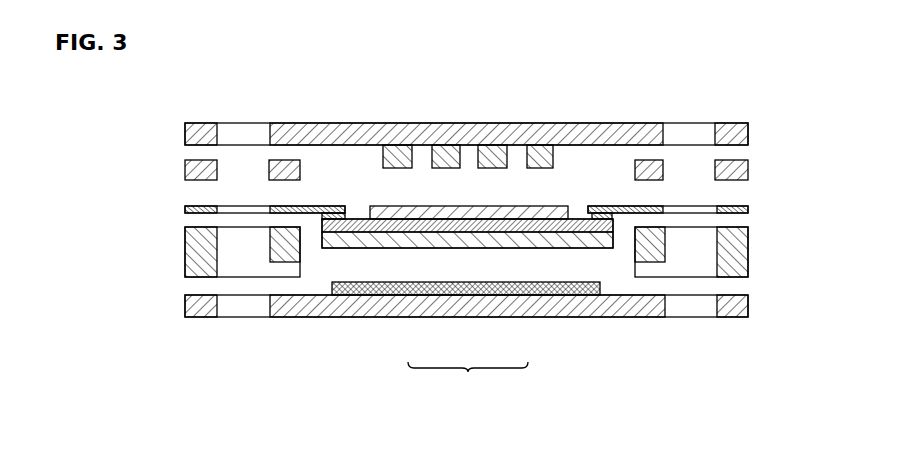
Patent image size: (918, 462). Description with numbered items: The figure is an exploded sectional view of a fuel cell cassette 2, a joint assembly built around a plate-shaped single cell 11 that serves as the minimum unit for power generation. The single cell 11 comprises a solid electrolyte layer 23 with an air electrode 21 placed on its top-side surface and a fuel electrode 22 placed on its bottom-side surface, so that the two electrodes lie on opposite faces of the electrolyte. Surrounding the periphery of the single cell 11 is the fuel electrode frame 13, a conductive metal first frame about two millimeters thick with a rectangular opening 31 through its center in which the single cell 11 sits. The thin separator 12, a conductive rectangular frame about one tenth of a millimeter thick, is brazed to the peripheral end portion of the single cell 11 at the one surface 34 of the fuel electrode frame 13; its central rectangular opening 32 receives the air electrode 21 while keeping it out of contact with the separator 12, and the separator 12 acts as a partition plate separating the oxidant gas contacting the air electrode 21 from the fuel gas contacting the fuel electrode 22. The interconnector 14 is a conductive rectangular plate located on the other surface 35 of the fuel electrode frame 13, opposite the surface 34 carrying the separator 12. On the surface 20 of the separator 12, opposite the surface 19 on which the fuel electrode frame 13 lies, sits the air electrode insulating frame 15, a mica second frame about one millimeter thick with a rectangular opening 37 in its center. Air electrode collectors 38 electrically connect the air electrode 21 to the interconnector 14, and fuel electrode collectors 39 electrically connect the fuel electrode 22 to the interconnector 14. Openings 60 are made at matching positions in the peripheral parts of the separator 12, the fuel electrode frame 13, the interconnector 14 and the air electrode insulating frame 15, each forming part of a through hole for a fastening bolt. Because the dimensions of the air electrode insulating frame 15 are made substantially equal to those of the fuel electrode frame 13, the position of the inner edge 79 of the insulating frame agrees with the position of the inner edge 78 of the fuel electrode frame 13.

The fuel cell cassette 2 is at (160, 240).
The single cell 11 is at (468, 372).
The separator 12 is at (748, 210).
The fuel electrode frame 13 is at (748, 253).
The interconnector 14 is at (748, 134).
The air electrode insulating frame 15 is at (748, 171).
The surface 19 is at (621, 216).
The surface 20 is at (612, 202).
The air electrode 21 is at (500, 222).
The fuel electrode 22 is at (423, 243).
The solid electrolyte layer 23 is at (466, 230).
The opening 31 is at (303, 250).
The opening 32 is at (345, 205).
The surface 34 is at (203, 223).
The surface 35 is at (199, 280).
The opening 37 is at (299, 172).
The air electrode collector 38 is at (460, 165).
The fuel electrode collector 39 is at (542, 282).
The openings 60 is at (238, 207).
The inner edge 78 is at (633, 217).
The inner edge 79 is at (628, 205).